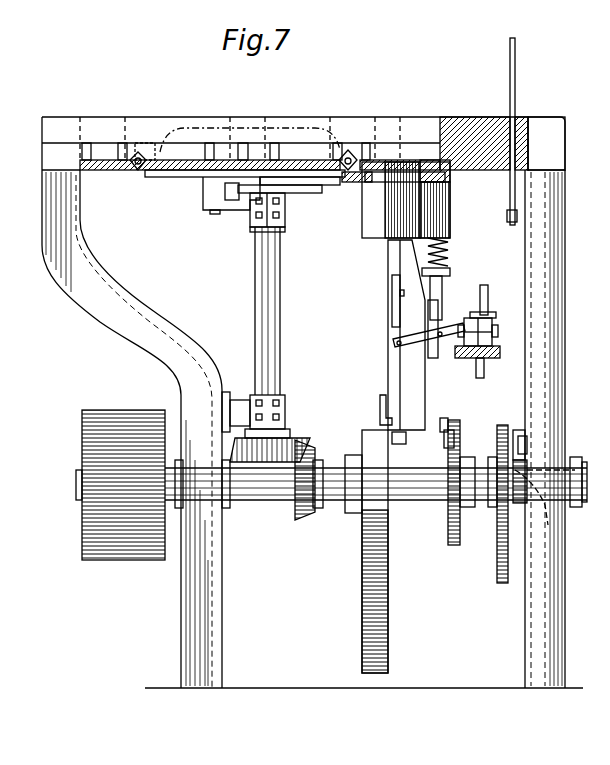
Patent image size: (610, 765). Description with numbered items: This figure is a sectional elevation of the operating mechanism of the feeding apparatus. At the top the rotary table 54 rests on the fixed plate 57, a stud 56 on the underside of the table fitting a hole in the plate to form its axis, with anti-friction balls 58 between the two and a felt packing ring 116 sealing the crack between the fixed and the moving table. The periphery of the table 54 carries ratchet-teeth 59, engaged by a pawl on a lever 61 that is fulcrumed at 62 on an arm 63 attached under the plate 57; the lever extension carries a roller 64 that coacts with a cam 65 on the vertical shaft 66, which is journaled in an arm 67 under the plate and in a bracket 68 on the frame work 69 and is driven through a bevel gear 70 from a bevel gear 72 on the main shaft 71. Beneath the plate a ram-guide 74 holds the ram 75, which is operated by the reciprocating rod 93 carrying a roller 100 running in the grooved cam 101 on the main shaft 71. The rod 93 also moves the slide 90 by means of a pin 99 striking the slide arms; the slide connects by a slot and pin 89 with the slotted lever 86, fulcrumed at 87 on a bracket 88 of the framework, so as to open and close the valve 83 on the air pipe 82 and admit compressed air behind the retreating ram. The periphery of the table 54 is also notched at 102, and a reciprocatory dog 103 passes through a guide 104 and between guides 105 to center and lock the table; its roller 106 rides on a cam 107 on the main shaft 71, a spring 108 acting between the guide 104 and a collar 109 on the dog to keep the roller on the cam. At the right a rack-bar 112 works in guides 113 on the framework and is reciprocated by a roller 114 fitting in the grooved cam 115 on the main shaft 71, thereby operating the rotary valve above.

The rotary table 54 is at (392, 117).
The stud 56 is at (253, 152).
The fixed plate 57 is at (116, 170).
The balls 58 is at (140, 170).
The ratchet-teeth 59 is at (357, 150).
The lever 61 is at (175, 177).
The fulcrum 62 is at (210, 214).
The arm 63 is at (233, 200).
The roller 64 is at (283, 214).
The cam 65 is at (318, 193).
The vertical shaft 66 is at (281, 272).
The arm 67 is at (255, 240).
The bracket 68 is at (242, 400).
The frame work 69 is at (178, 386).
The bevel gear 70 is at (300, 438).
The main shaft 71 is at (416, 500).
The bevel gear 72 is at (316, 460).
The ram-guide 74 is at (365, 228).
The ram 75 is at (375, 176).
The pipe 82 is at (486, 292).
The valve 83 is at (484, 362).
The slotted lever 86 is at (468, 318).
The fulcrum 87 is at (428, 352).
The bracket 88 is at (460, 358).
The slot and pin 89 is at (393, 343).
The slide 90 is at (392, 316).
The reciprocating rod 93 is at (388, 265).
The pin 99 is at (394, 422).
The roller 100 is at (395, 444).
The grooved cam 101 is at (388, 570).
The notches 102 is at (302, 143).
The dog 103 is at (450, 180).
The guide 104 is at (450, 213).
The guides 105 is at (440, 400).
The roller 106 is at (454, 436).
The cam 107 is at (460, 448).
The spring 108 is at (450, 246).
The collar 109 is at (448, 270).
The rack-bar 112 is at (516, 80).
The guides 113 is at (527, 440).
The roller 114 is at (527, 470).
The grooved cam 115 is at (497, 536).
The packing ring 116 is at (440, 130).